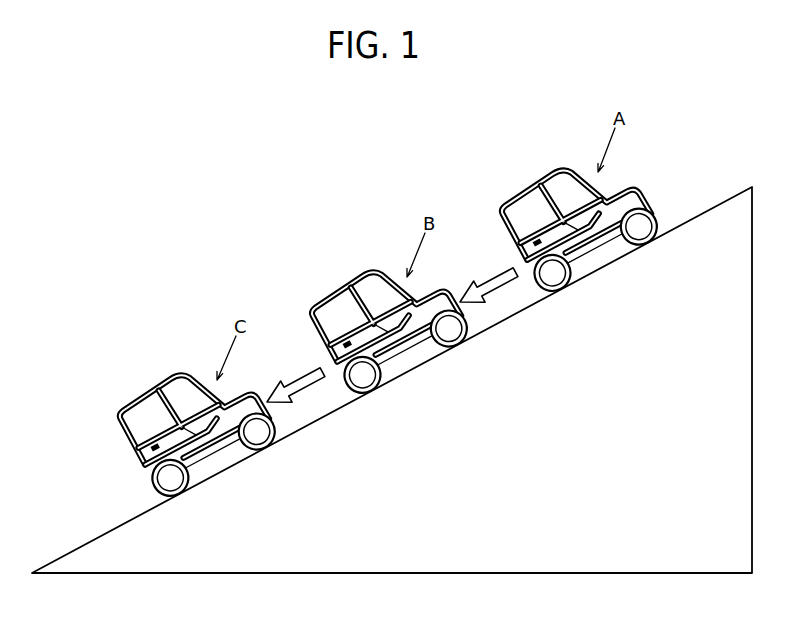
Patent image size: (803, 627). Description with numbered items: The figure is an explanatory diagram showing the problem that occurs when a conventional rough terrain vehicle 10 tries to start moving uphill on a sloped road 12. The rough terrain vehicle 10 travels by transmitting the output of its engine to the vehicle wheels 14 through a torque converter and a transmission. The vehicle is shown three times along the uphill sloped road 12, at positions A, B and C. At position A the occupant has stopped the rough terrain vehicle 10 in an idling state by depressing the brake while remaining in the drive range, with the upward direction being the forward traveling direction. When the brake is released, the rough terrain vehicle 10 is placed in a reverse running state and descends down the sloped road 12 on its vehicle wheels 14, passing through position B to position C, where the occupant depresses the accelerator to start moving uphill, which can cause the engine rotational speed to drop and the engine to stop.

The rough terrain vehicle 10 is at (558, 171).
The sloped road 12 is at (705, 212).
The vehicle wheels 14 is at (639, 228).